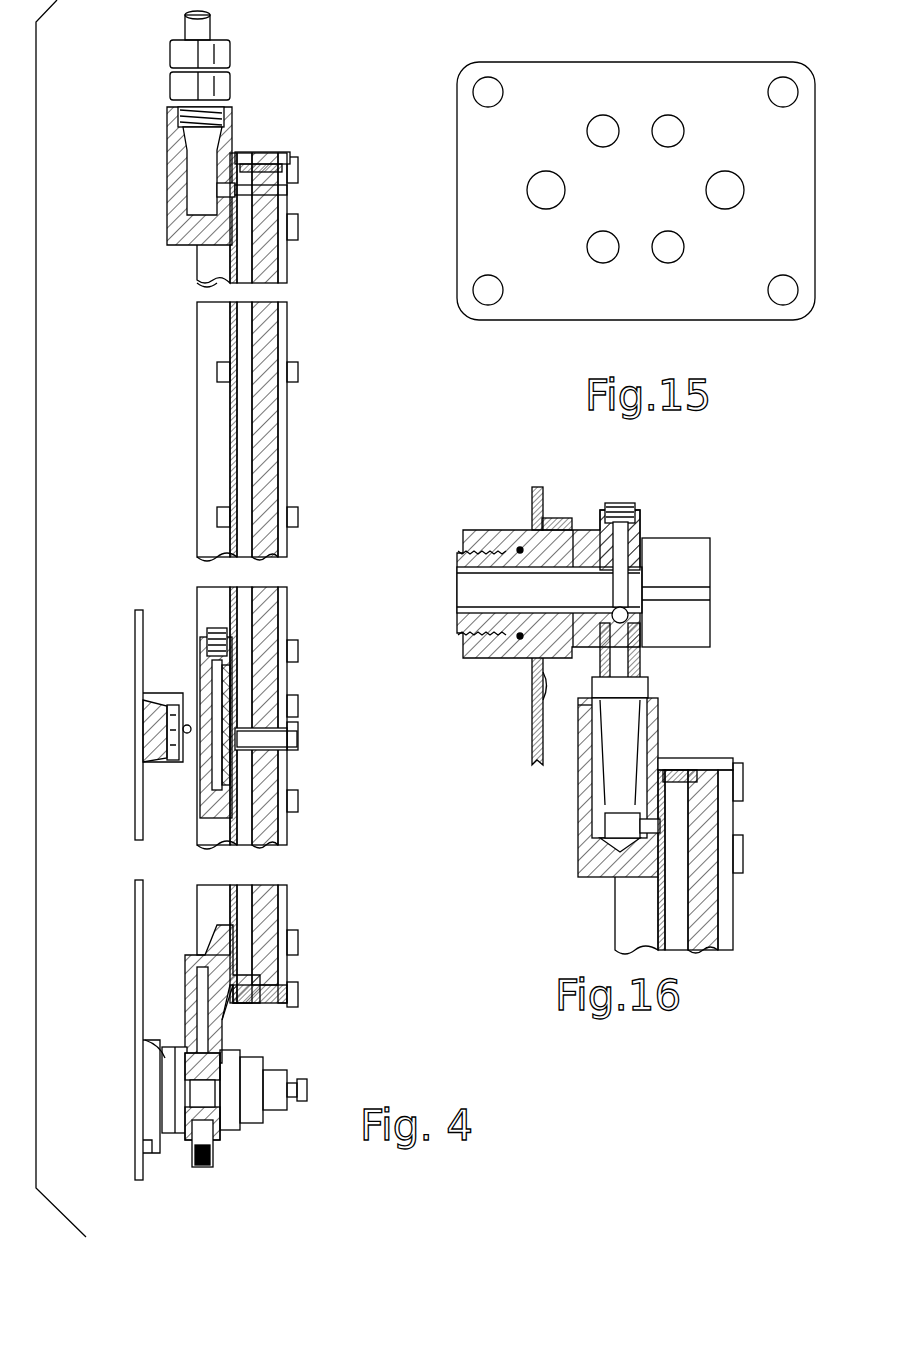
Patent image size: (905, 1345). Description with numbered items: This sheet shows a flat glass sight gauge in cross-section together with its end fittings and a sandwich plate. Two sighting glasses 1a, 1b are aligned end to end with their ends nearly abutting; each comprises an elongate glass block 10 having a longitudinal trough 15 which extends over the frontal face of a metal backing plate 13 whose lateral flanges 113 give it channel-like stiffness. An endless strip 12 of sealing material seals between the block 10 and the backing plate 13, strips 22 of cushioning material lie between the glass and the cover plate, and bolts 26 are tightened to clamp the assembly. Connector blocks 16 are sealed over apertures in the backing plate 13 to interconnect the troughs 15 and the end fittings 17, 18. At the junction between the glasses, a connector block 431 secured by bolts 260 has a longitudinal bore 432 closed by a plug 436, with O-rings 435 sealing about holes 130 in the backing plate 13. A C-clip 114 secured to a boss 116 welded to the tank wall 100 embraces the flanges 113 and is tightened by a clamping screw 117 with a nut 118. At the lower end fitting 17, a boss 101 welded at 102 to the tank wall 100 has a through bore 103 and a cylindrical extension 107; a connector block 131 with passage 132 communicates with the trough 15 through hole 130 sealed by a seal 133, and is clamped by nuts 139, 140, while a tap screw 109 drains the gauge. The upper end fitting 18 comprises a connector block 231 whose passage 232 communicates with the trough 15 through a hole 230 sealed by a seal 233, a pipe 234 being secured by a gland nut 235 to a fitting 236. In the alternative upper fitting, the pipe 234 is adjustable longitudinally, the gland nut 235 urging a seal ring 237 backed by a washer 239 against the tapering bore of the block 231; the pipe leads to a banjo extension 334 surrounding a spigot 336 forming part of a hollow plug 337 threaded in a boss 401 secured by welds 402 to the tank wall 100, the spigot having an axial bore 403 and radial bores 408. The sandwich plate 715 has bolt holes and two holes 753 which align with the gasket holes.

In FIG. 4, the upper end fitting 18 is at (243, 65).
In FIG. 4, the pipe 234 is at (185, 27).
In FIG. 16, the pipe 234 is at (640, 665).
In FIG. 4, the gland nut 235 is at (180, 57).
In FIG. 16, the gland nut 235 is at (650, 690).
In FIG. 4, the fitting 236 is at (180, 88).
In FIG. 4, the connector block 231 is at (170, 230).
In FIG. 16, the connector block 231 is at (585, 835).
In FIG. 4, the passage 232 is at (212, 158).
In FIG. 16, the passage 232 is at (597, 853).
In FIG. 4, the seal 233 is at (230, 200).
In FIG. 16, the seal 233 is at (667, 765).
In FIG. 4, the connector block 16 is at (158, 190).
In FIG. 16, the connector block 16 is at (565, 815).
In FIG. 4, the hole 230 is at (247, 180).
In FIG. 16, the hole 230 is at (658, 807).
In FIG. 4, the endless strip of sealing material 12 is at (237, 222).
In FIG. 4, the lateral flanges 113 is at (205, 338).
In FIG. 4, the backing plate 13 is at (232, 428).
In FIG. 4, the trough 15 is at (245, 462).
In FIG. 4, the glass block 10 is at (270, 315).
In FIG. 16, the glass block 10 is at (700, 903).
In FIG. 4, the strips of cushioning material 22 is at (282, 452).
In FIG. 4, the bolts 26 is at (300, 365).
In FIG. 4, the sighting glass 1b is at (293, 600).
In FIG. 4, the sighting glass 1a is at (293, 908).
In FIG. 4, the tank wall 100 is at (137, 635).
In FIG. 16, the tank wall 100 is at (535, 740).
In FIG. 4, the longitudinal bore 432 is at (215, 760).
In FIG. 4, the O-rings 435 is at (235, 785).
In FIG. 4, the plug 436 is at (207, 630).
In FIG. 4, the connector block 431 is at (200, 818).
In FIG. 4, the bolts 260 is at (295, 735).
In FIG. 4, the hole 130 is at (237, 682).
In FIG. 4, the boss 116 is at (150, 715).
In FIG. 4, the nut 118 is at (205, 748).
In FIG. 4, the C-clip 114 is at (197, 693).
In FIG. 4, the clamping screw 117 is at (187, 725).
In FIG. 4, the connector block 131 is at (210, 953).
In FIG. 4, the passage 132 is at (205, 1025).
In FIG. 4, the seal 133 is at (245, 990).
In FIG. 4, the gauge end fitting 17 is at (305, 1068).
In FIG. 4, the boss 101 is at (150, 1090).
In FIG. 4, the weld 102 is at (140, 1038).
In FIG. 4, the nut 139 is at (160, 1058).
In FIG. 4, the through bore 103 is at (210, 1090).
In FIG. 4, the nut 140 is at (235, 1085).
In FIG. 4, the cylindrical extension 107 is at (285, 1095).
In FIG. 4, the tap screw 109 is at (215, 1150).
In FIG. 15, the sandwich plate 715 is at (648, 98).
In FIG. 15, the holes 753 is at (540, 172).
In FIG. 16, the radial bores 408 is at (505, 545).
In FIG. 16, the hollow plug 337 is at (558, 532).
In FIG. 16, the banjo extension 334 is at (640, 555).
In FIG. 16, the spigot 336 is at (640, 545).
In FIG. 16, the boss 401 is at (572, 555).
In FIG. 16, the axial bore 403 is at (650, 600).
In FIG. 16, the washer 239 is at (650, 715).
In FIG. 16, the seal ring 237 is at (597, 747).
In FIG. 16, the welds 402 is at (540, 690).